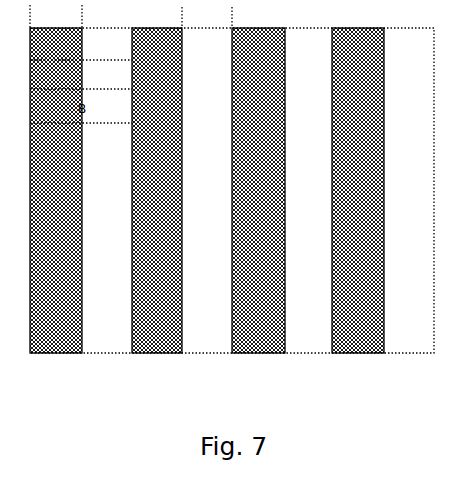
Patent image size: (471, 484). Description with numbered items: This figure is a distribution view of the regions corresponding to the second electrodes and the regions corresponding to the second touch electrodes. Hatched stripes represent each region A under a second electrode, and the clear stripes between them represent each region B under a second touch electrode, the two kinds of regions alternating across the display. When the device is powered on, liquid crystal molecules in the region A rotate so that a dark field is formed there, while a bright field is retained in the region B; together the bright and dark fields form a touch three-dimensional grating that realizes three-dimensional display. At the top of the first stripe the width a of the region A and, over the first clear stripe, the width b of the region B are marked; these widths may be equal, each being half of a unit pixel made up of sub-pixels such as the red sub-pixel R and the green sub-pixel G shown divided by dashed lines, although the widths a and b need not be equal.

The region under the second electrode A is at (65, 358).
The region under the second touch electrode B is at (193, 345).
The red sub-pixel R is at (81, 48).
The green sub-pixel G is at (81, 80).
The width of the region under the second electrode a is at (82, 16).
The width of the region under the second touch electrode b is at (232, 16).